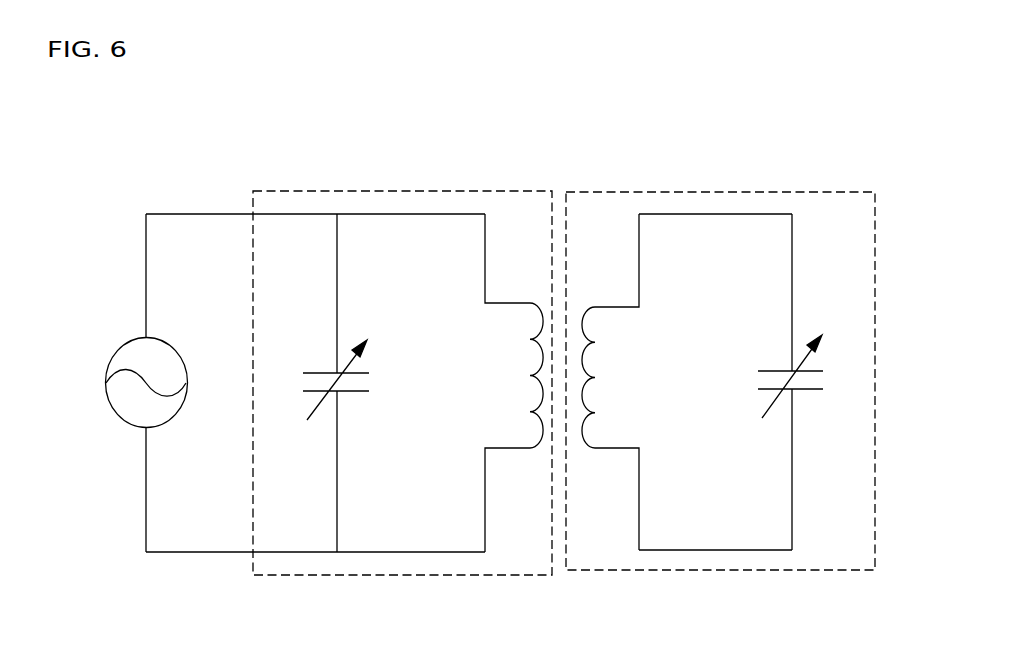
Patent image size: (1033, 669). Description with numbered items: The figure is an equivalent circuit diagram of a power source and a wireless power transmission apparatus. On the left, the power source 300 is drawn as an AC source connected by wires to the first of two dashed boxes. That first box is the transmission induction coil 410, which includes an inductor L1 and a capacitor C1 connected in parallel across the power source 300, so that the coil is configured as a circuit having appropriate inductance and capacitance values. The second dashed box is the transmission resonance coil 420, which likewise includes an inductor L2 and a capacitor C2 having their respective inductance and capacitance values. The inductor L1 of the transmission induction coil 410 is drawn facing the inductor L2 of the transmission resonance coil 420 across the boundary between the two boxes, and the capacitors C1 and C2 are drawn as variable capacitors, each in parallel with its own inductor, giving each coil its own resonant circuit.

The power source 300 is at (114, 351).
The transmission induction coil 410 is at (402, 344).
The transmission resonance coil 420 is at (720, 341).
The capacitor C1 is at (321, 383).
The inductor L1 is at (514, 383).
The inductor L2 is at (611, 382).
The capacitor C2 is at (808, 382).